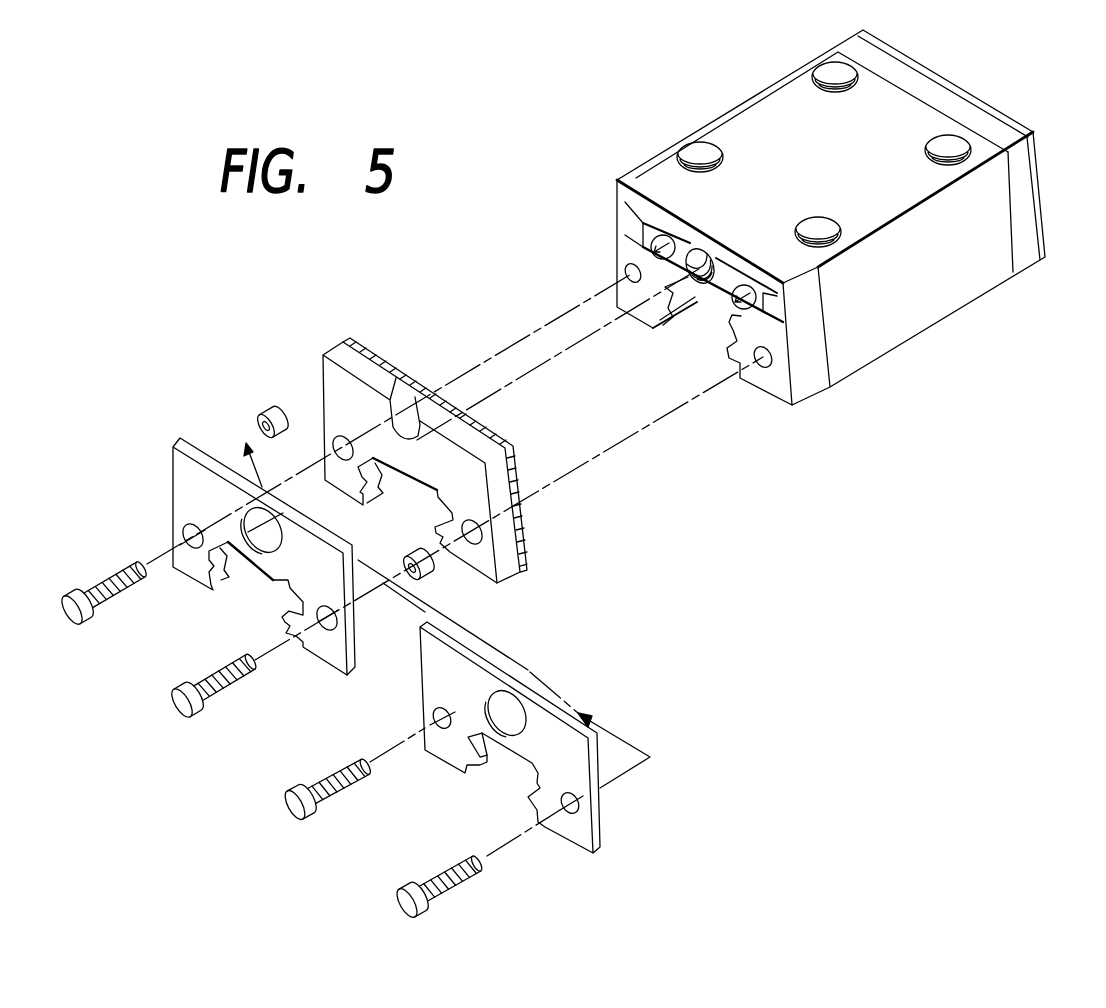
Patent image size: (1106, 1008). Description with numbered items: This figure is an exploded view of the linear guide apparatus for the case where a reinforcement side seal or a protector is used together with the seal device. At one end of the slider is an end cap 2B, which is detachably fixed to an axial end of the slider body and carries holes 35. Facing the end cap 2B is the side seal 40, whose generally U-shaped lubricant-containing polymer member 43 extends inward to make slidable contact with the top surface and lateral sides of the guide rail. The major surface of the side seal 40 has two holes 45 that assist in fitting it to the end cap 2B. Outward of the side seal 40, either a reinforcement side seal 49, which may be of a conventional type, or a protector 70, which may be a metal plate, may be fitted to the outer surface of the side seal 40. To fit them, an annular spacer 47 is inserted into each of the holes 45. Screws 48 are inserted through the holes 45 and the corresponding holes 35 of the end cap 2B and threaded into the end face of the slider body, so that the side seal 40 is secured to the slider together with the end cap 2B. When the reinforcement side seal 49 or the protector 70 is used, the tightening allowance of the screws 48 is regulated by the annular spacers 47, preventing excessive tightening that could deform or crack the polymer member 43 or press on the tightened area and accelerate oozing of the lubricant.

The end cap 2B is at (637, 177).
The hole of the end cap 35 is at (765, 370).
The side seal 40 is at (353, 341).
The polymer member 43 is at (507, 535).
The hole 45 is at (490, 548).
The annular spacer 47 is at (270, 410).
The screw 48 is at (70, 597).
The reinforcement side seal 49 is at (173, 445).
The protector 70 is at (598, 838).